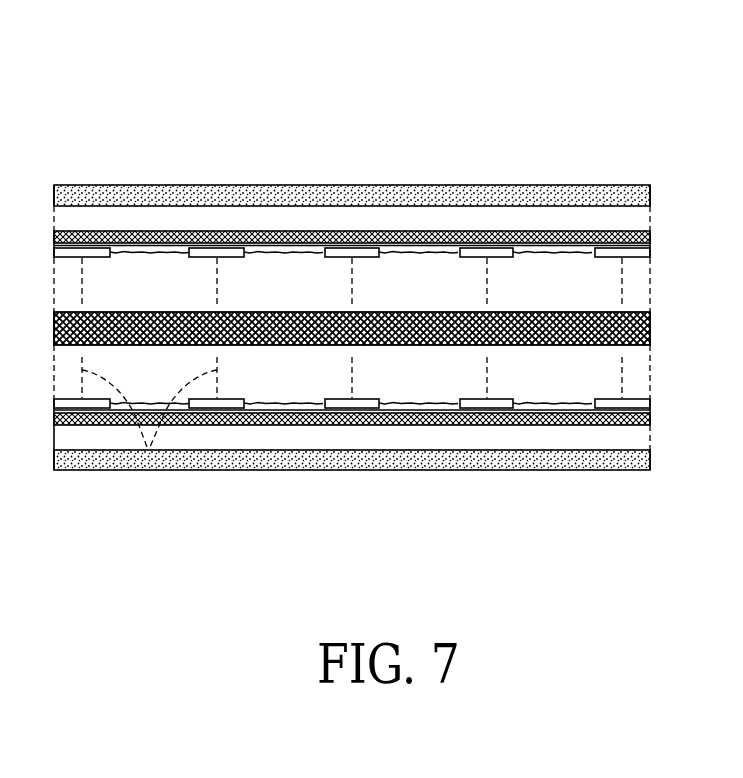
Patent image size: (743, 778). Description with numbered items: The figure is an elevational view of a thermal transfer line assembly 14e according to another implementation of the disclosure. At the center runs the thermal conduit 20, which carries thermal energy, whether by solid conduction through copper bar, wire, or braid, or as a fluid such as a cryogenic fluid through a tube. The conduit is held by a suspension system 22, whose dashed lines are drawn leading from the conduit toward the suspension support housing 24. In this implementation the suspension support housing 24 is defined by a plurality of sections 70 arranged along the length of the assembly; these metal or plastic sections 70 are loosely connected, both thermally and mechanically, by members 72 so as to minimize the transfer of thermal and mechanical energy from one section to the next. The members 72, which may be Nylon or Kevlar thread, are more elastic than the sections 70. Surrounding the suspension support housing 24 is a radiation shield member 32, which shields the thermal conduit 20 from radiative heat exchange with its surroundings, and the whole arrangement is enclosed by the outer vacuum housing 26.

The thermal transfer line assembly 14e is at (570, 99).
The thermal conduit 20 is at (650, 327).
The suspension system 22 is at (148, 448).
The suspension support housing 24 is at (352, 250).
The vacuum housing 26 is at (465, 471).
The radiation shield member 32 is at (650, 421).
The sections 70 is at (222, 409).
The members 72 is at (152, 250).